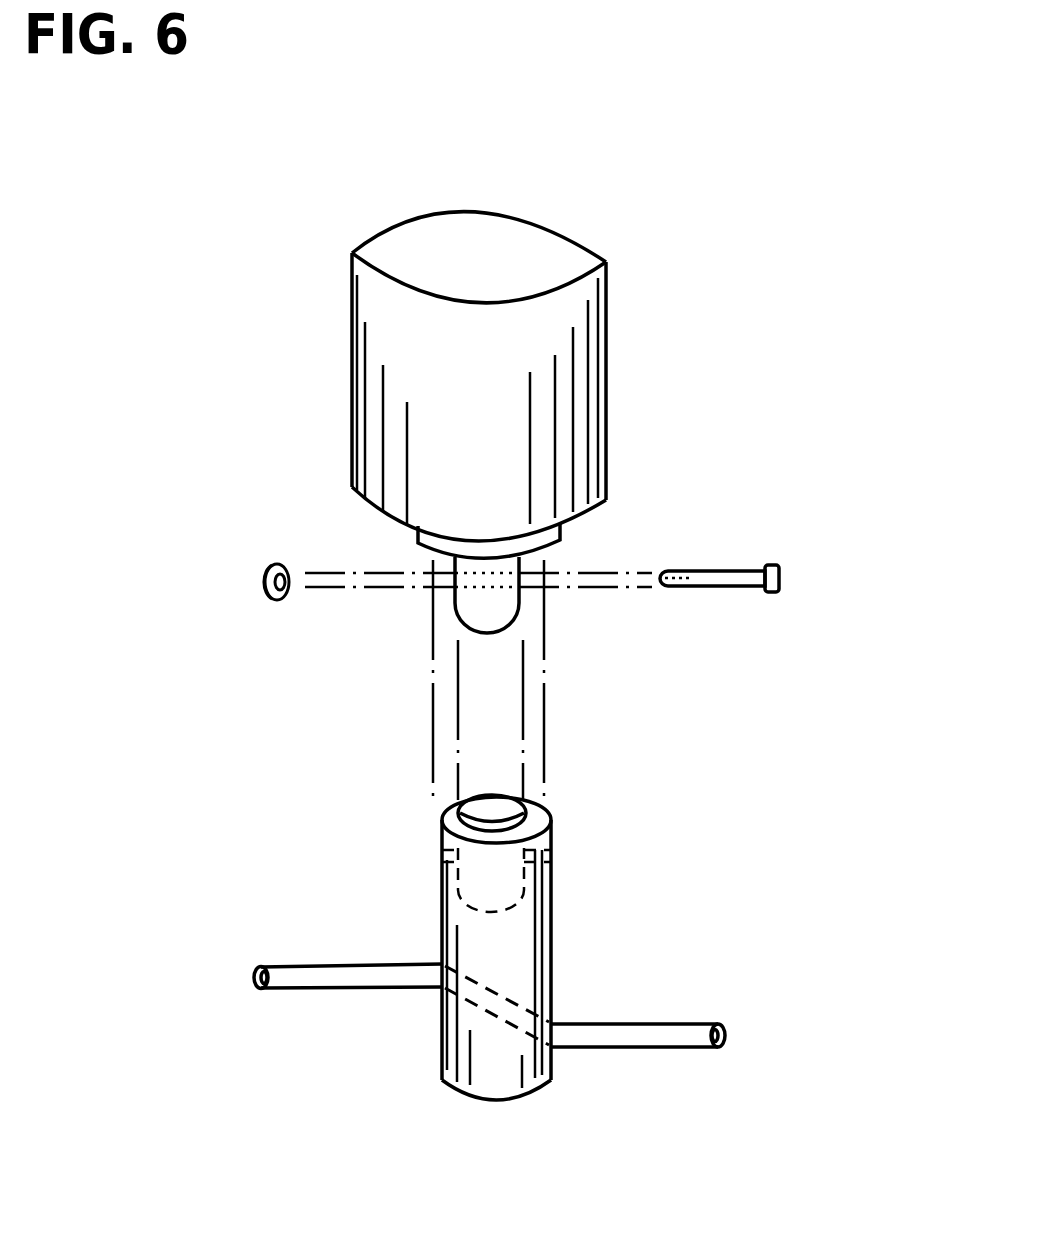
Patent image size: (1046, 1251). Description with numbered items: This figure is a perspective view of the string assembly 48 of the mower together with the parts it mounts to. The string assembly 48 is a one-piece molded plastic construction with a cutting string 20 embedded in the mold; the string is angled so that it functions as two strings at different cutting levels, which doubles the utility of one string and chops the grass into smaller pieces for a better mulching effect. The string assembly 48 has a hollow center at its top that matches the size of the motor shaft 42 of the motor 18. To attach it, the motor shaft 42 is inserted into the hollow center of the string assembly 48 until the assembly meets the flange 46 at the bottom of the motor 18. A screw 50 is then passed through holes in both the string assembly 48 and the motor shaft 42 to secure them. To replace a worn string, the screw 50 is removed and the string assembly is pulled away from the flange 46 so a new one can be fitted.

The motor 18 is at (565, 232).
The flange 46 is at (420, 538).
The motor shaft 42 is at (521, 603).
The screw 50 is at (718, 566).
The string assembly 48 is at (437, 858).
The cutting string 20 is at (670, 1022).